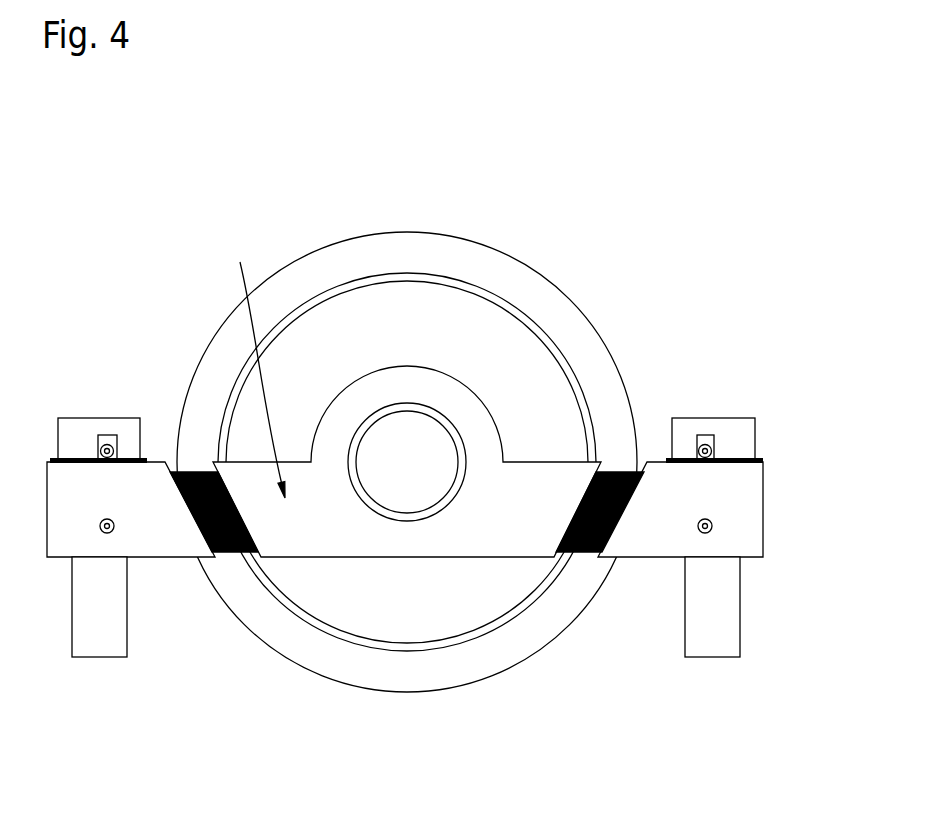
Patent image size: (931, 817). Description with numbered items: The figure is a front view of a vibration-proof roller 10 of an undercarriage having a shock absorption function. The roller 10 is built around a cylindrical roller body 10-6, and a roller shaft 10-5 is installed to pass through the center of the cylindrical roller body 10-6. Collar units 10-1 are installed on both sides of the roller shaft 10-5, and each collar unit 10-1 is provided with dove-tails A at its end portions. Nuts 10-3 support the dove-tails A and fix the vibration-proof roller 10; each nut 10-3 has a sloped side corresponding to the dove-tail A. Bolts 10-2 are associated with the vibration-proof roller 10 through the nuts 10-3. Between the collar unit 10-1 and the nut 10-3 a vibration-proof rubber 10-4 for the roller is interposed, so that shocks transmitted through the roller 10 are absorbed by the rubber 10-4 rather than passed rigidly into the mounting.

The vibration-proof roller 10 is at (452, 425).
The collar unit 10-1 is at (540, 478).
The bolt 10-2 is at (737, 425).
The nut 10-3 is at (755, 495).
The vibration-proof rubber 10-4 is at (580, 556).
The roller shaft 10-5 is at (390, 480).
The cylindrical roller body 10-6 is at (340, 242).
The dove-tail A is at (256, 362).